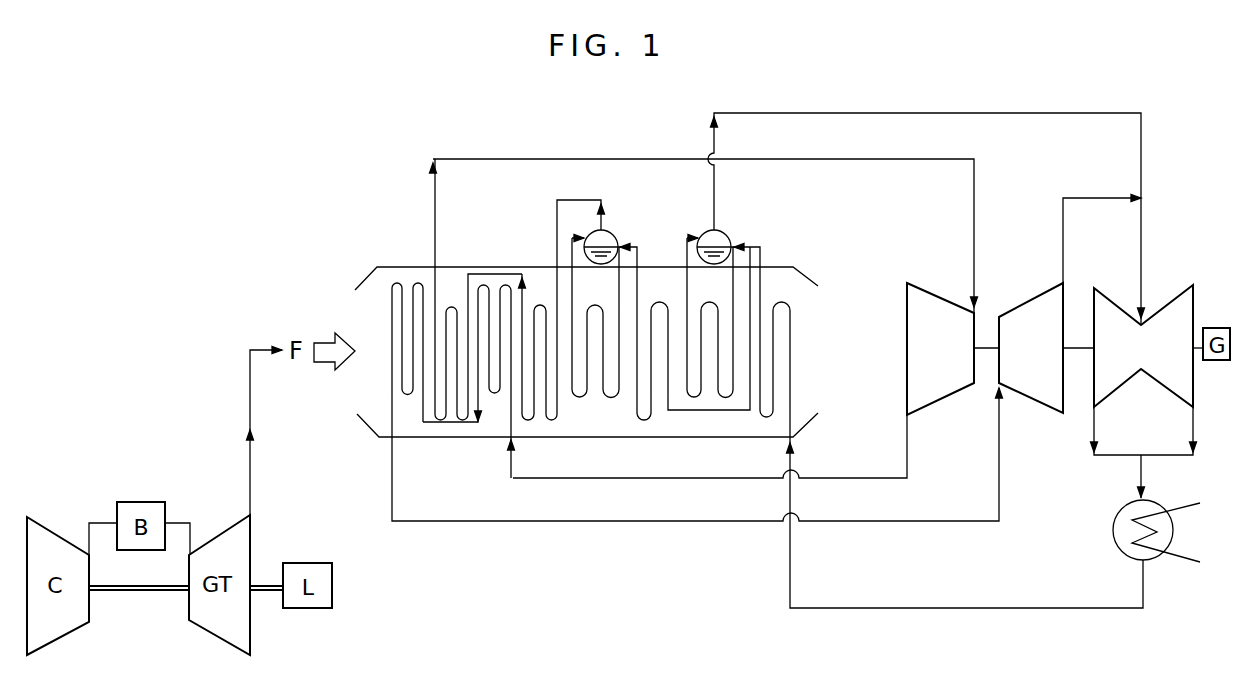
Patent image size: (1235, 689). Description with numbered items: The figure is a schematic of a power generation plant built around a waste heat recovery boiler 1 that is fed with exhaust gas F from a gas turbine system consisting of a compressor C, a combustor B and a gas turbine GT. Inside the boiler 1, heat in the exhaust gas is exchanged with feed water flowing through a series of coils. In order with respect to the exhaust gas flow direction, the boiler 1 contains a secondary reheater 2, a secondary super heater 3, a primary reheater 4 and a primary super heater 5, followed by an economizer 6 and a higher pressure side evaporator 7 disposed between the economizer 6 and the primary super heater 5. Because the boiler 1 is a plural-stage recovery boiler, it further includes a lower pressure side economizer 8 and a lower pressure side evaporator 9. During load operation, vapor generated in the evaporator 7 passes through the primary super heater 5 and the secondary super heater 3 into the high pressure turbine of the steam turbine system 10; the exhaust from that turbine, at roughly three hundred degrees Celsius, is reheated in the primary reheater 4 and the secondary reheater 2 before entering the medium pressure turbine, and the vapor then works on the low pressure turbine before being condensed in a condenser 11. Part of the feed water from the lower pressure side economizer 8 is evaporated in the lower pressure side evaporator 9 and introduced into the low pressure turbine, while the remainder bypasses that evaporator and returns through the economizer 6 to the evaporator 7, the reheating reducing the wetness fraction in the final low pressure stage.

The waste heat recovery boiler 1 is at (377, 446).
The secondary reheater 2 is at (407, 399).
The secondary super heater 3 is at (451, 307).
The primary reheater 4 is at (494, 398).
The primary super heater 5 is at (540, 305).
The economizer 6 is at (659, 305).
The evaporator 7 is at (613, 232).
The lower pressure side economizer 8 is at (791, 302).
The lower pressure side evaporator 9 is at (727, 229).
The steam turbine system 10 is at (1041, 261).
The condenser 11 is at (1113, 541).